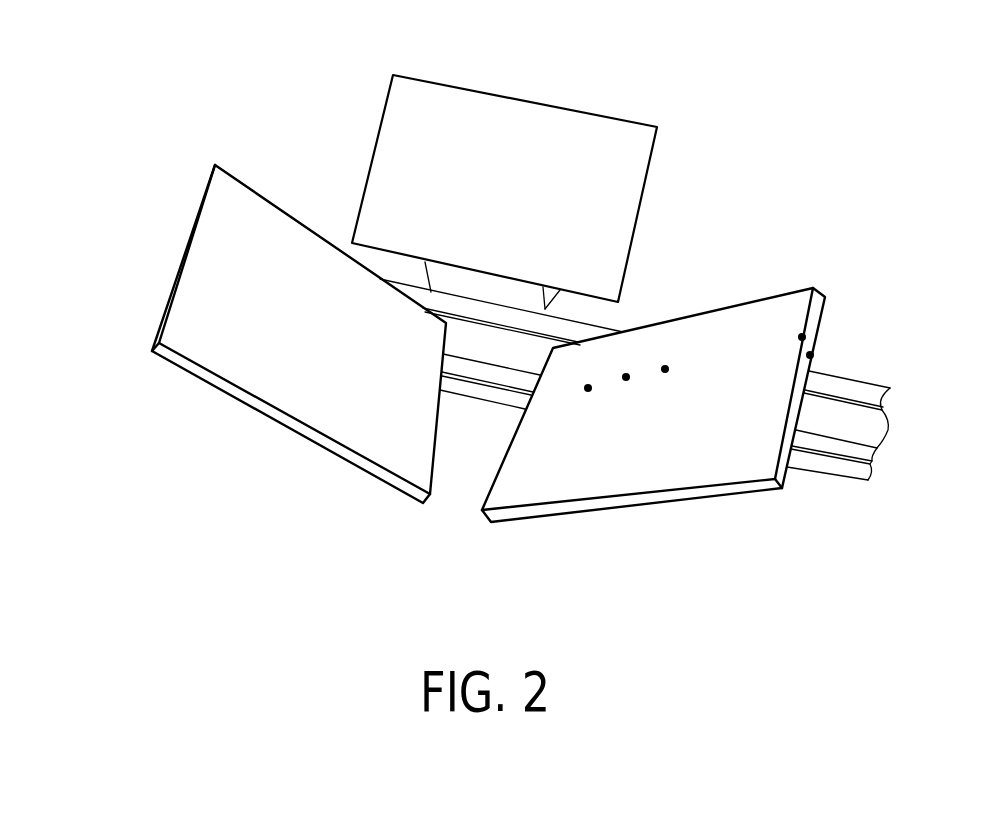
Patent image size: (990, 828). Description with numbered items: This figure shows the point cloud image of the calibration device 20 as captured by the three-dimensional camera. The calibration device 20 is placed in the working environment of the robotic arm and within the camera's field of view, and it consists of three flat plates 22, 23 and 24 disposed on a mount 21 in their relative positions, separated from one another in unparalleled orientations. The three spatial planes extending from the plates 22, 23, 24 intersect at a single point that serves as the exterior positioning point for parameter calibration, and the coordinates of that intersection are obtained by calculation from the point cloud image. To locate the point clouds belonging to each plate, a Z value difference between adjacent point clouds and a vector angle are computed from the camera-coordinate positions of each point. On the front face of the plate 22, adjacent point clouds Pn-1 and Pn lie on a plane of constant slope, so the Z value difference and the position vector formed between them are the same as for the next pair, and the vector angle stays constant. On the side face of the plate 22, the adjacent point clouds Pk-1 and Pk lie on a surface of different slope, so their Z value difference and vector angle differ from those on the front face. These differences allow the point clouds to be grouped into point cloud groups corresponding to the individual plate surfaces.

The calibration device 20 is at (807, 90).
The mount 21 is at (866, 424).
The plate 22 is at (697, 392).
The plate 23 is at (187, 247).
The plate 24 is at (528, 98).
The point cloud Pn is at (624, 374).
The point cloud Pn-1 is at (663, 375).
The point cloud Pk-1 is at (805, 335).
The point cloud Pk is at (813, 356).